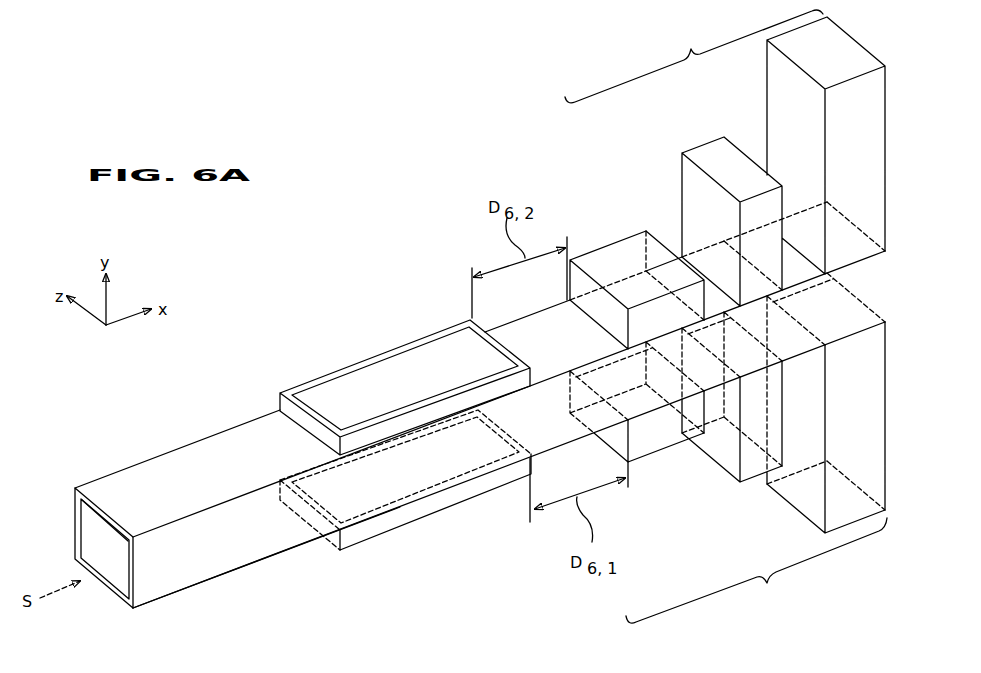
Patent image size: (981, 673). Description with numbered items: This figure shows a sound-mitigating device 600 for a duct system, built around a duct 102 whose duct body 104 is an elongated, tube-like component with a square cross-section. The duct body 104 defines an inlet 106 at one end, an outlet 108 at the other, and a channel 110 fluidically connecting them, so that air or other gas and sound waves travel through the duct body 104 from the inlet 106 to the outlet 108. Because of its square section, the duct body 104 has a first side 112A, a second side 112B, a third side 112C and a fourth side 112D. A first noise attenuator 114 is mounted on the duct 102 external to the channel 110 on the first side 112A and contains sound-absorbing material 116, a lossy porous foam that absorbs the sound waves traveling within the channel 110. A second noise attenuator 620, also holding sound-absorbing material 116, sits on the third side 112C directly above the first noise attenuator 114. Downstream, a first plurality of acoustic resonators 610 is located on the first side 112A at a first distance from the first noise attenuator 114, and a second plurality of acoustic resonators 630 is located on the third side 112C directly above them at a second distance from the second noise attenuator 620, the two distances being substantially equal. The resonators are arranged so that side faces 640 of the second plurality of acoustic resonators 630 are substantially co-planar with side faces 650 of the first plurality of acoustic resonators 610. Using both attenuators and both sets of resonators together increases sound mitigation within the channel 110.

The duct 102 is at (163, 452).
The duct body 104 is at (212, 435).
The inlet 106 is at (77, 496).
The outlet 108 is at (836, 206).
The channel 110 is at (98, 528).
The first side 112A is at (182, 593).
The second side 112B is at (267, 550).
The third side 112C is at (253, 443).
The fourth side 112D is at (69, 532).
The first noise attenuator 114 is at (403, 527).
The sound-absorbing material 116 is at (407, 372).
The sound-mitigating device 600 is at (393, 220).
The first plurality of acoustic resonators 610 is at (756, 570).
The second noise attenuator 620 is at (347, 363).
The second plurality of acoustic resonators 630 is at (694, 341).
The side faces 640 is at (717, 448).
The side faces 650 is at (680, 208).